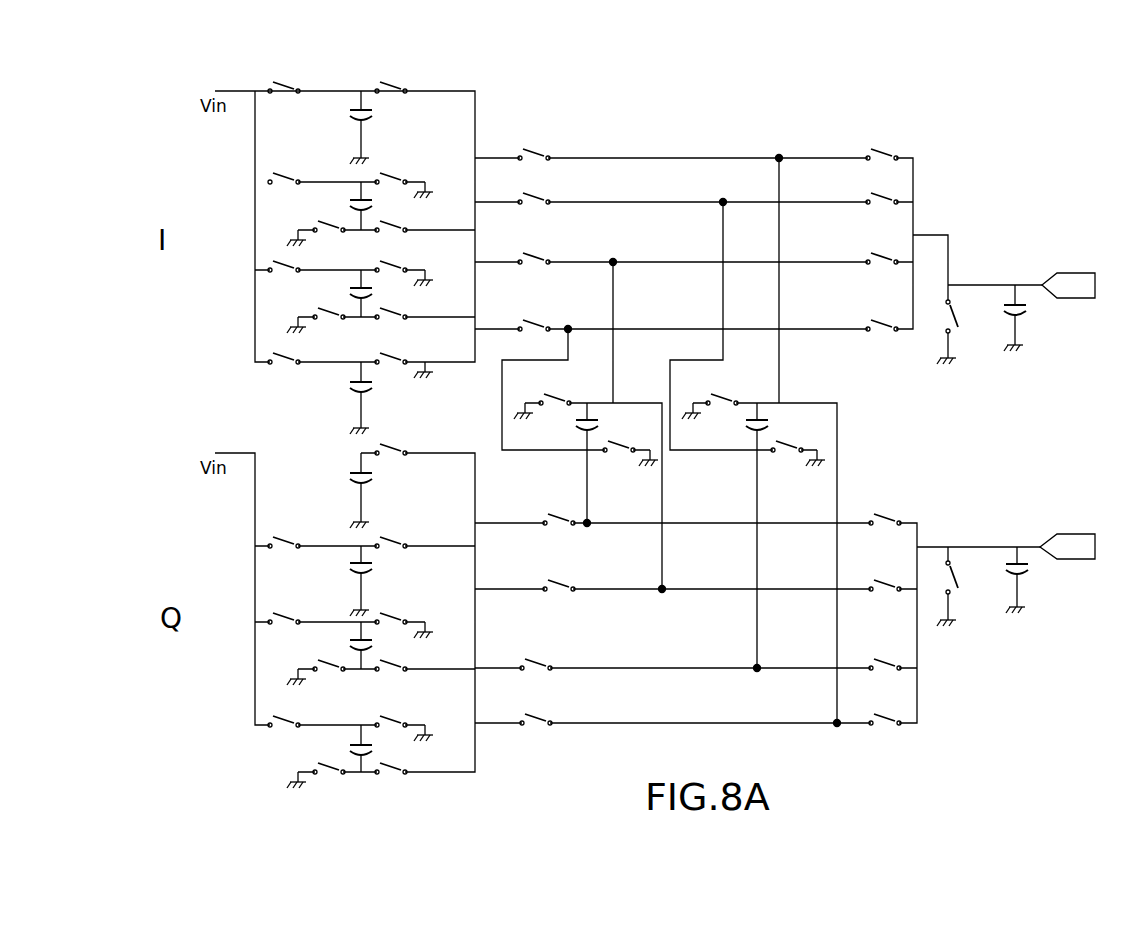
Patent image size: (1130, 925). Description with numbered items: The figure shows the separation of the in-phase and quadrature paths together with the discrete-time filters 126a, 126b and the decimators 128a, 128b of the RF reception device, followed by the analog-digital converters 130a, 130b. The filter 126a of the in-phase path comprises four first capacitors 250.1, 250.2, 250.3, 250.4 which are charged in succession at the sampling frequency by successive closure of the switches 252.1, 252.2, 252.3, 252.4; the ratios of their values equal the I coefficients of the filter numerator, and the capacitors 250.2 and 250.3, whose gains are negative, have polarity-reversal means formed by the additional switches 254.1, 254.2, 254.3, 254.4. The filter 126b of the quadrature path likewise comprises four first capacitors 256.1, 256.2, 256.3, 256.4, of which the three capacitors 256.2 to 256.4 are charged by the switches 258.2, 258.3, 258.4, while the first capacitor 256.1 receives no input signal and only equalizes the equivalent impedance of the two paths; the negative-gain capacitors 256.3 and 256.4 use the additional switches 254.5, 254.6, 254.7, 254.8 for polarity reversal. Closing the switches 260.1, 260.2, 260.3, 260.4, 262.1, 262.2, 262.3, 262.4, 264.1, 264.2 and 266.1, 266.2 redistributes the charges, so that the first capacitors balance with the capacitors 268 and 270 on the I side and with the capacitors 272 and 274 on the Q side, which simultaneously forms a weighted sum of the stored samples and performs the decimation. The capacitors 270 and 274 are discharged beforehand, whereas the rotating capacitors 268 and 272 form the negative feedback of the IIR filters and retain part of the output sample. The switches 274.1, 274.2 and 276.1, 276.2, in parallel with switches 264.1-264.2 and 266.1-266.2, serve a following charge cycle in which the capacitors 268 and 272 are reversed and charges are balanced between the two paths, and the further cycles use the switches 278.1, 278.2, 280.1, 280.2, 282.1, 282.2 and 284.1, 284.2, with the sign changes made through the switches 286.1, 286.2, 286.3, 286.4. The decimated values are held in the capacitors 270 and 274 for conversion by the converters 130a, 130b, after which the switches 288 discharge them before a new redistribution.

The discrete-time filter of the in-phase path 126a is at (489, 80).
The discrete-time filter of the quadrature path 126b is at (516, 772).
The decimator 128a is at (894, 105).
The decimator 128b is at (918, 498).
The analog-digital converter 130a is at (1068, 270).
The analog-digital converter 130b is at (1070, 532).
The first capacitor 250.1 is at (361, 108).
The first capacitor 250.2 is at (355, 198).
The first capacitor 250.3 is at (355, 283).
The first capacitor 250.4 is at (352, 380).
The switch 252.1 is at (285, 87).
The switch 252.2 is at (282, 178).
The switch 252.3 is at (283, 262).
The switch 252.4 is at (280, 358).
The additional switch 254.1 is at (328, 224).
The additional switch 254.2 is at (392, 225).
The additional switch 254.3 is at (327, 312).
The additional switch 254.4 is at (388, 312).
The additional switch 254.5 is at (327, 665).
The additional switch 254.6 is at (465, 655).
The additional switch 254.7 is at (327, 770).
The additional switch 254.8 is at (388, 770).
The first capacitor 256.1 is at (356, 470).
The first capacitor 256.2 is at (352, 560).
The first capacitor 256.3 is at (352, 640).
The first capacitor 256.4 is at (370, 748).
The switch 258.2 is at (282, 545).
The switch 258.3 is at (282, 620).
The switch 258.4 is at (282, 722).
The switch 260.1 is at (392, 87).
The switch 260.2 is at (395, 178).
The switch 260.3 is at (397, 265).
The switch 260.4 is at (392, 357).
The switch 262.1 is at (393, 448).
The switch 262.2 is at (393, 540).
The switch 262.3 is at (393, 615).
The switch 262.4 is at (393, 718).
The switch 264.1 is at (533, 255).
The switch 264.2 is at (882, 260).
The switch 266.1 is at (537, 662).
The switch 266.2 is at (884, 666).
The capacitor 268 is at (592, 420).
The capacitor 270 is at (1030, 310).
The capacitor 272 is at (767, 422).
The capacitor 274 is at (1030, 567).
The switch 274.1 is at (533, 195).
The switch 274.2 is at (882, 200).
The switch 276.1 is at (560, 515).
The switch 276.2 is at (884, 521).
The switch 278.1 is at (530, 322).
The switch 278.2 is at (882, 327).
The switch 280.1 is at (537, 715).
The switch 280.2 is at (884, 721).
The switch 282.1 is at (530, 150).
The switch 282.2 is at (880, 148).
The switch 284.1 is at (560, 583).
The switch 284.2 is at (884, 587).
The switch 286.1 is at (555, 398).
The switch 286.2 is at (617, 458).
The switch 286.3 is at (730, 375).
The switch 286.4 is at (783, 458).
The switch 288 is at (957, 300).